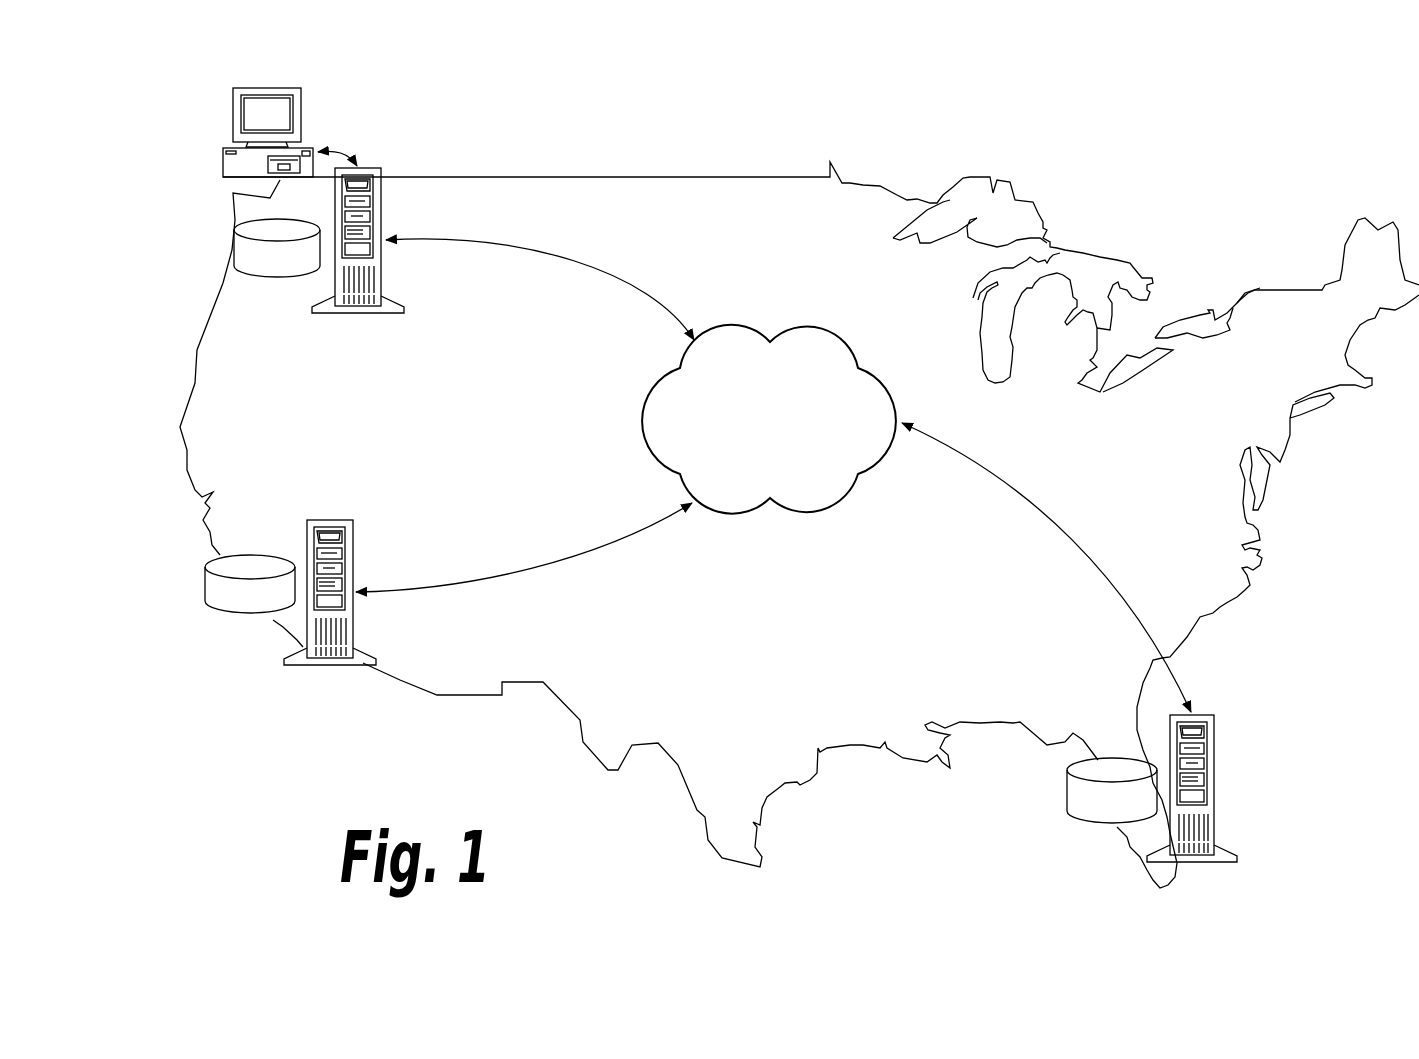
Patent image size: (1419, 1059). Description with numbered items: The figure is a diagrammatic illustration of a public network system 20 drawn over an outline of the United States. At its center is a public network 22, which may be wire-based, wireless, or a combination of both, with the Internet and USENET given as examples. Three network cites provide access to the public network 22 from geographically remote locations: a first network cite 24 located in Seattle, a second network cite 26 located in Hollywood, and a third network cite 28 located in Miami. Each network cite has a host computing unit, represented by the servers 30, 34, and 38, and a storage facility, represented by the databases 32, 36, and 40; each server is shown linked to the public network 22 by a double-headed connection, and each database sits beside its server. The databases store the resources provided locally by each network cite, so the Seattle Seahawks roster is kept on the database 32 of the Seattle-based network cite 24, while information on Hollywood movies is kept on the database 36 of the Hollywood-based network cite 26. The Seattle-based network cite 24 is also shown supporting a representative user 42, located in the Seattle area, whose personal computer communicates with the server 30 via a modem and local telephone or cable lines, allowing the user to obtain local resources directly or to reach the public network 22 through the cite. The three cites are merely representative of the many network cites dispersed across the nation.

The public network system 20 is at (697, 160).
The public network 22 is at (807, 323).
The first network cite 24 is at (397, 350).
The second network cite 26 is at (277, 685).
The third network cite 28 is at (1130, 873).
The server 30 is at (373, 205).
The database 32 is at (302, 283).
The server 34 is at (333, 518).
The database 36 is at (247, 555).
The server 38 is at (1213, 783).
The database 40 is at (1068, 790).
The user 42 is at (297, 115).